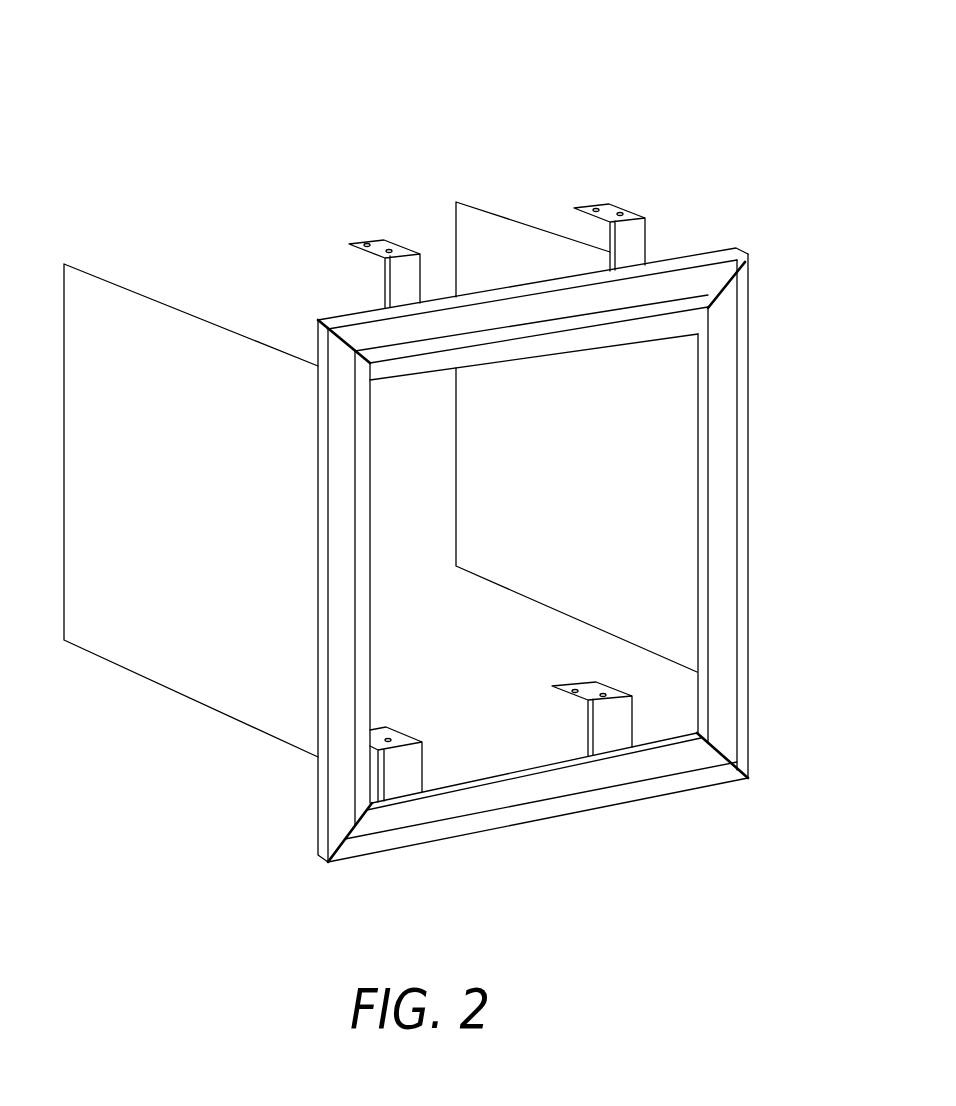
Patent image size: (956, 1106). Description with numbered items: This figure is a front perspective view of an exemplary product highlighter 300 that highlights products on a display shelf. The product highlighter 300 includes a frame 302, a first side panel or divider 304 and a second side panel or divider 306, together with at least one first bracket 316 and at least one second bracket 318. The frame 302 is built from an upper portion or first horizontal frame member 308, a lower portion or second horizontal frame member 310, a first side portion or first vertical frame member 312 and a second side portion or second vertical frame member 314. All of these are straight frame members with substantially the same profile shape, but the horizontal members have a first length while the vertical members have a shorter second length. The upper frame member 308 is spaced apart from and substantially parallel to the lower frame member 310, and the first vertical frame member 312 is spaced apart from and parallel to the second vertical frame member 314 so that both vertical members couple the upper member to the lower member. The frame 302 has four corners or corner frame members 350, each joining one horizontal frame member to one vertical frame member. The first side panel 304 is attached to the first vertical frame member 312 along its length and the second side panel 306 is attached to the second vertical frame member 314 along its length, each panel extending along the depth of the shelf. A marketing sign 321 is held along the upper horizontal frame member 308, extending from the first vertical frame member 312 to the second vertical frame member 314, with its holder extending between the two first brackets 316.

The product highlighter 300 is at (691, 143).
The frame 302 is at (545, 568).
The first side panel 304 is at (533, 571).
The second side panel 306 is at (150, 641).
The first horizontal frame member 308 is at (545, 297).
The second horizontal frame member 310 is at (538, 790).
The first vertical frame member 312 is at (733, 482).
The second vertical frame member 314 is at (330, 664).
The first bracket 316 is at (397, 280).
The second bracket 318 is at (407, 762).
The marketing sign 321 is at (603, 332).
The corner frame member 350 is at (330, 322).